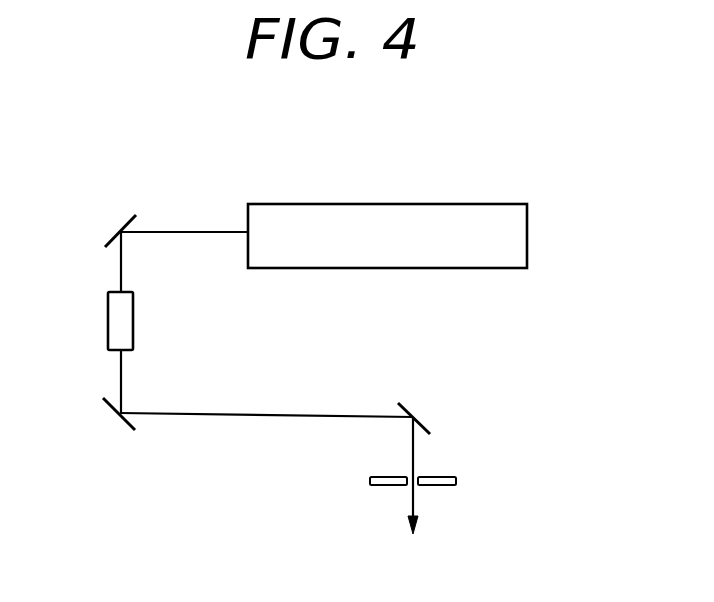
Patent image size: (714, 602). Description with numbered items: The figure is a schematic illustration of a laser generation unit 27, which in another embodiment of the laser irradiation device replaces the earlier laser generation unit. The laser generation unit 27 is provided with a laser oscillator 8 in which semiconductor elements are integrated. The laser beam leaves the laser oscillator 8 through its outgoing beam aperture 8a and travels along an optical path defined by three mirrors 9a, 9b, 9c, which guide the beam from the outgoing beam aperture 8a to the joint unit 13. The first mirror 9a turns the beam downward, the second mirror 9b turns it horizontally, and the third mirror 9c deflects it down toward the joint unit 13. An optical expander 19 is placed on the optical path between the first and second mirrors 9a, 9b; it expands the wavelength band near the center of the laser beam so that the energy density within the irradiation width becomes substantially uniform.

The laser oscillator 8 is at (428, 204).
The outgoing beam aperture 8a is at (244, 235).
The mirror 9a is at (112, 237).
The mirror 9b is at (107, 405).
The mirror 9c is at (422, 420).
The optical expander 19 is at (133, 325).
The joint unit 13 is at (414, 490).
The laser generation unit 27 is at (442, 326).